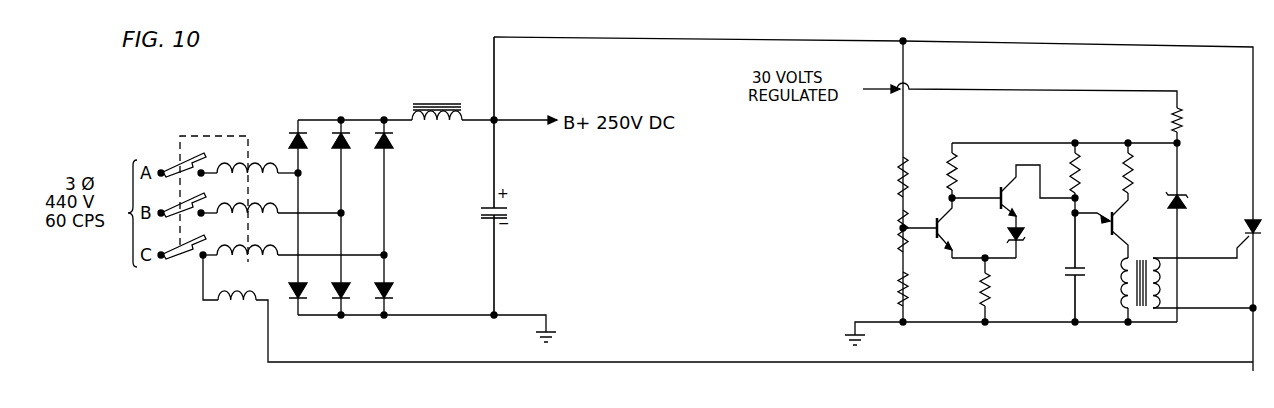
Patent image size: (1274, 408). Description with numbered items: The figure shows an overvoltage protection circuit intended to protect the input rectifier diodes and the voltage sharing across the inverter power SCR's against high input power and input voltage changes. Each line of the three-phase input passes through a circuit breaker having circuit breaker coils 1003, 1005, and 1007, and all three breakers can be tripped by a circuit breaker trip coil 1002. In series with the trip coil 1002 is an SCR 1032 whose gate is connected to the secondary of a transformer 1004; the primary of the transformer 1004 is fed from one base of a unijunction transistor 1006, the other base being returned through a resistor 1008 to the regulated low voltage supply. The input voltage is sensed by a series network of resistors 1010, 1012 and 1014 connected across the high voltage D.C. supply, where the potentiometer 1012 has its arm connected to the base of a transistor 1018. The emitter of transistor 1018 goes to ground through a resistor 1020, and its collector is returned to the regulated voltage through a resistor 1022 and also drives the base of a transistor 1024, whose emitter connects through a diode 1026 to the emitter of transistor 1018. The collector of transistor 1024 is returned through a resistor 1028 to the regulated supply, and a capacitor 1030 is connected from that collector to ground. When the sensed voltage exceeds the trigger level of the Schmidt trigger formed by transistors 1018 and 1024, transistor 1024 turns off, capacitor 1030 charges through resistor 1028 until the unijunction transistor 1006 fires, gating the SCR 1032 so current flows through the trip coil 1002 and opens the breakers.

The circuit breaker trip coil 1002 is at (243, 306).
The circuit breaker coil 1003 is at (246, 266).
The transformer 1004 is at (1140, 253).
The circuit breaker coil 1005 is at (246, 225).
The unijunction transistor 1006 is at (1118, 230).
The circuit breaker coil 1007 is at (246, 183).
The resistor 1008 is at (1133, 171).
The resistor 1010 is at (898, 177).
The potentiometer 1012 is at (898, 226).
The resistor 1014 is at (898, 287).
The transistor 1018 is at (945, 224).
The resistor 1020 is at (990, 290).
The resistor 1022 is at (955, 166).
The transistor 1024 is at (1010, 200).
The diode 1026 is at (1025, 236).
The resistor 1028 is at (1079, 172).
The capacitor 1030 is at (1068, 271).
The SCR 1032 is at (1246, 228).